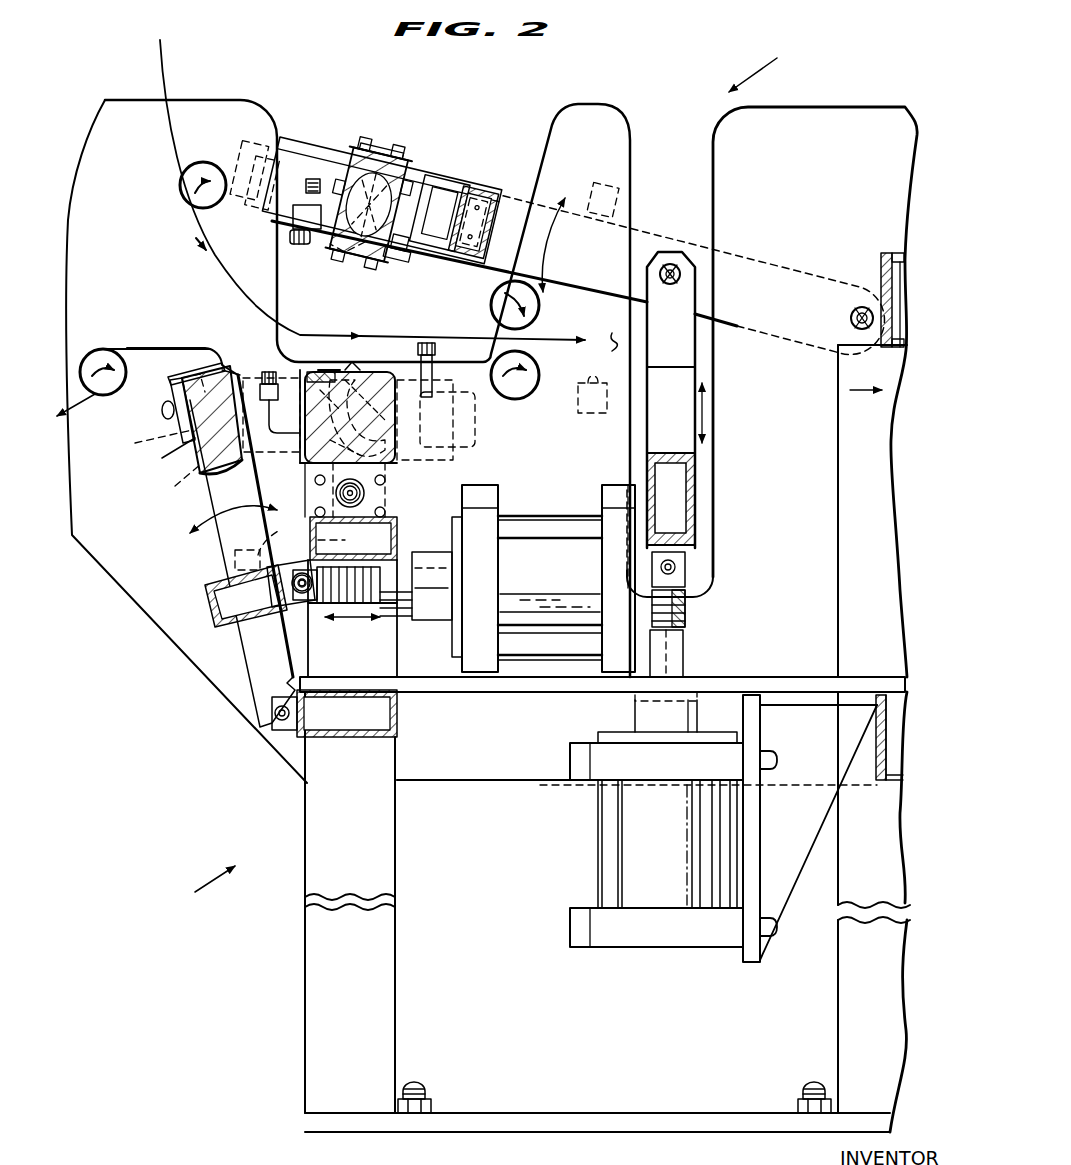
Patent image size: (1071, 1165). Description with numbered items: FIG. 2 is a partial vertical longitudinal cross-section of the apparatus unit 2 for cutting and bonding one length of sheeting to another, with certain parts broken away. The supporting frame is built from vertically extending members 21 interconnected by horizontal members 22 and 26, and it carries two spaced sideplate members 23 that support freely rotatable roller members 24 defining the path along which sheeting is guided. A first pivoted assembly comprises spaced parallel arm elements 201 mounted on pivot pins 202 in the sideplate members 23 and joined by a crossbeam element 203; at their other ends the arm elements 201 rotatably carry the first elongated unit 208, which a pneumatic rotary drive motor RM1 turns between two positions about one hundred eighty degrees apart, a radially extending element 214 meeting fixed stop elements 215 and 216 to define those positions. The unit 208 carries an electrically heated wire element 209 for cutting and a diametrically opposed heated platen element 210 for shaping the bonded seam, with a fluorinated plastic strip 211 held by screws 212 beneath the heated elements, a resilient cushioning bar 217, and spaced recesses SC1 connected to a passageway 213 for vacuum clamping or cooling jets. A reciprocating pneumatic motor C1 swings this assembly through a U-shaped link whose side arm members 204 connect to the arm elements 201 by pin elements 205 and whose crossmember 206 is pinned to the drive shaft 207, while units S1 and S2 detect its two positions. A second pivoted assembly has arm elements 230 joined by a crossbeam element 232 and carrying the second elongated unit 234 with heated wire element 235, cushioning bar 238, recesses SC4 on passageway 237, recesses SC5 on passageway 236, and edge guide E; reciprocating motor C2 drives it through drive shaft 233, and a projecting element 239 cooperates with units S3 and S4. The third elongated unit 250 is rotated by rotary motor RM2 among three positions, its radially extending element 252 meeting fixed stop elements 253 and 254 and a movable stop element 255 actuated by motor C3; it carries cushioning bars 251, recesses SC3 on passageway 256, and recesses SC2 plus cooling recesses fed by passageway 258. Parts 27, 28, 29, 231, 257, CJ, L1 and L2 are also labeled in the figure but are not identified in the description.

The apparatus unit 2 is at (487, 476).
The vertically extending members 21 is at (878, 466).
The horizontal members 22 is at (885, 253).
The sideplate members 23 is at (137, 194).
The roller members 24 is at (203, 167).
The horizontal members 26 is at (490, 780).
The mounting region 27 is at (795, 828).
The cylinder end plates 28 is at (669, 774).
The bolts 29 is at (775, 760).
The arm elements 201 is at (638, 243).
The pivot pins 202 is at (850, 318).
The crossbeam element 203 is at (510, 205).
The side arm members 204 is at (695, 352).
The pin elements 205 is at (676, 255).
The crossmember 206 is at (695, 492).
The drive shaft 207 is at (685, 660).
The first elongated unit 208 is at (405, 175).
The electrically heated wire element 209 is at (362, 260).
The bonded seam shaping platen element 210 is at (365, 140).
The strip of adhesive coated tape 211 is at (393, 150).
The screws 212 is at (365, 130).
The passageway 213 is at (410, 200).
The radially extending element 214 is at (314, 179).
The fixed stop element 215 is at (282, 212).
The fixed stop element 216 is at (478, 262).
The elongated bar 217 is at (425, 255).
The arm elements 230 is at (260, 682).
The pivot bolt 231 is at (274, 732).
The crossbeam element 232 is at (240, 633).
The drive shaft 233 is at (395, 610).
The second elongated unit 234 is at (163, 454).
The electrically heated wire element 235 is at (235, 370).
The passageway 236 is at (147, 441).
The passageway 237 is at (172, 478).
The elongated bar 238 is at (222, 370).
The projecting element 239 is at (305, 566).
The third elongated unit 250 is at (300, 368).
The elongated bar 251 is at (340, 370).
The radially extending element 252 is at (283, 433).
The fixed stop element 253 is at (244, 511).
The fixed stop element 254 is at (445, 392).
The movable stop element 255 is at (362, 494).
The passageway 256 is at (397, 470).
The adjusting screw 257 is at (411, 368).
The passageway 258 is at (300, 372).
The first web L1 is at (172, 118).
The second web L2 is at (130, 343).
The pneumatic rotary drive motor RM1 is at (292, 137).
The pneumatic rotary drive motor RM2 is at (453, 443).
The sensing unit S1 is at (592, 184).
The sensing unit S2 is at (598, 413).
The sensing unit S3 is at (352, 541).
The sensing unit S4 is at (266, 542).
The spaced recesses SC1 is at (336, 245).
The spaced recesses SC2 is at (370, 354).
The spaced recesses SC3 is at (425, 420).
The spaced recesses SC4 is at (216, 435).
The spaced recesses SC5 is at (185, 376).
The reciprocating pneumatic drive motor C1 is at (677, 851).
The reciprocating pneumatic drive motor C2 is at (555, 593).
The pneumatic reciprocating motor C3 is at (364, 500).
The cutter jaw CJ is at (350, 417).
The edge guide E is at (160, 408).